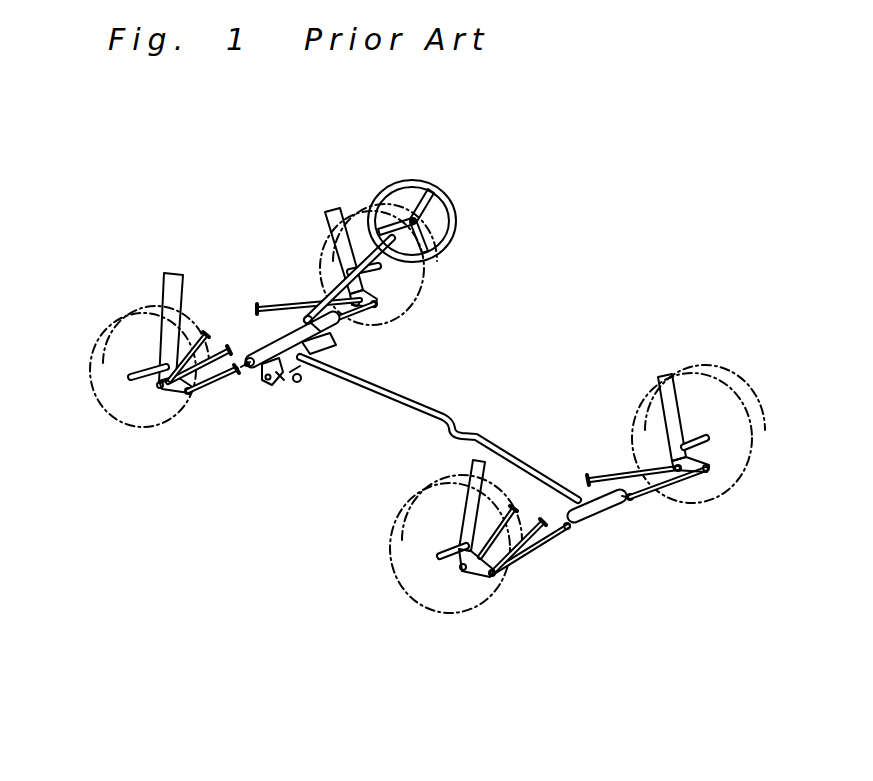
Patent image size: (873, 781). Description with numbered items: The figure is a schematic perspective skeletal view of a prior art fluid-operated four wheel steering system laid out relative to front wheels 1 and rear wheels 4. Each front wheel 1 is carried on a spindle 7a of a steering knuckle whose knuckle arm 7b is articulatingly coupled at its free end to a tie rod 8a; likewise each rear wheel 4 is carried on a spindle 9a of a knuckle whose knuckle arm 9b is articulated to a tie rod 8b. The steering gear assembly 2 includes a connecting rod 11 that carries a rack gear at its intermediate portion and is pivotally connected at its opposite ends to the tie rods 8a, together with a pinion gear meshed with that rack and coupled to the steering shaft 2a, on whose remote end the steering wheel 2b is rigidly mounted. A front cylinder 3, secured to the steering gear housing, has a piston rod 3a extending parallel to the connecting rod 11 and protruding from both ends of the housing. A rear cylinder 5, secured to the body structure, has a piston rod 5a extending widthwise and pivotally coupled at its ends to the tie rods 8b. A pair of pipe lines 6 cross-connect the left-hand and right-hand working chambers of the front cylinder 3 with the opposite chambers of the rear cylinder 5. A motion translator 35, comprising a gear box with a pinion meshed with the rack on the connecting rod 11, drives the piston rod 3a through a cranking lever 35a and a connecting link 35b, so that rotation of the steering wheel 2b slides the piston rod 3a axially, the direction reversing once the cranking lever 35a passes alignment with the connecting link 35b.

The front wheel 1 is at (93, 397).
The steering gear assembly 2 is at (250, 357).
The steering shaft 2a is at (322, 310).
The steering wheel 2b is at (448, 203).
The front cylinder 3 is at (297, 383).
The piston rod 3a is at (304, 345).
The rear wheel 4 is at (400, 596).
The rear cylinder 5 is at (592, 518).
The piston rod 5a is at (630, 501).
The pipe lines 6 is at (445, 412).
The spindle 7a is at (140, 366).
The knuckle arm 7b is at (163, 387).
The tie rod 8a is at (200, 387).
The tie rod 8b is at (533, 545).
The spindle 9a is at (440, 563).
The knuckle arm 9b is at (473, 570).
The connecting rod 11 is at (247, 358).
The motion translator 35 is at (250, 394).
The cranking lever 35a is at (268, 382).
The connecting link 35b is at (280, 383).